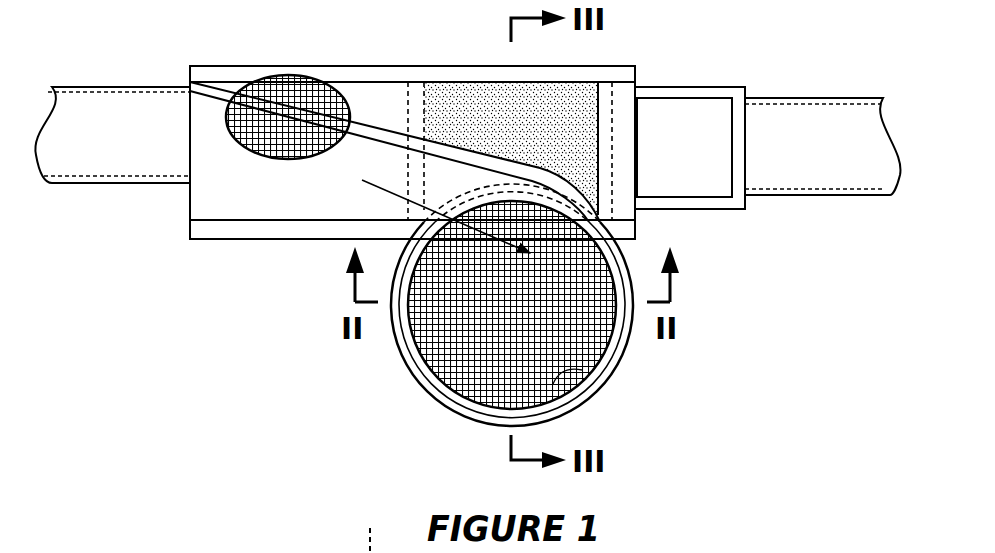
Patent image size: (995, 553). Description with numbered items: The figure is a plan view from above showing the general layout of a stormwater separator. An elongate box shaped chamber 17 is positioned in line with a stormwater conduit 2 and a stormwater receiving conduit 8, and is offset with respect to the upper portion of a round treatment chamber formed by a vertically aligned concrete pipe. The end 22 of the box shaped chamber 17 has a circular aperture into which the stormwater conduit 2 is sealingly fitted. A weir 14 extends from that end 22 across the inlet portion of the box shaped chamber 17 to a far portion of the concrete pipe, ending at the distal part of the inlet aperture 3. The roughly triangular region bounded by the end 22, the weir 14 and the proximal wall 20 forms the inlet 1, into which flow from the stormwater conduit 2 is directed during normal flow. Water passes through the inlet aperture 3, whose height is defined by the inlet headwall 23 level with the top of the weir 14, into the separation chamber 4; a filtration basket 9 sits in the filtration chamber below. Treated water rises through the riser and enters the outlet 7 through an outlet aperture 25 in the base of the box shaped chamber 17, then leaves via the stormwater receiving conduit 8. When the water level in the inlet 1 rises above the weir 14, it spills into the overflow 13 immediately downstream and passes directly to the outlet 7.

The inlet 1 is at (295, 167).
The stormwater conduit 2 is at (117, 128).
The inlet aperture 3 is at (362, 180).
The separation chamber 4 is at (522, 313).
The outlet 7 is at (667, 145).
The stormwater receiving conduit 8 is at (783, 128).
The filtration basket 9 is at (587, 372).
The overflow 13 is at (367, 105).
The weir 14 is at (273, 100).
The box shaped chamber 17 is at (213, 262).
The proximal wall 20 is at (287, 228).
The end 22 is at (200, 228).
The inlet headwall 23 is at (623, 63).
The outlet aperture 25 is at (482, 97).